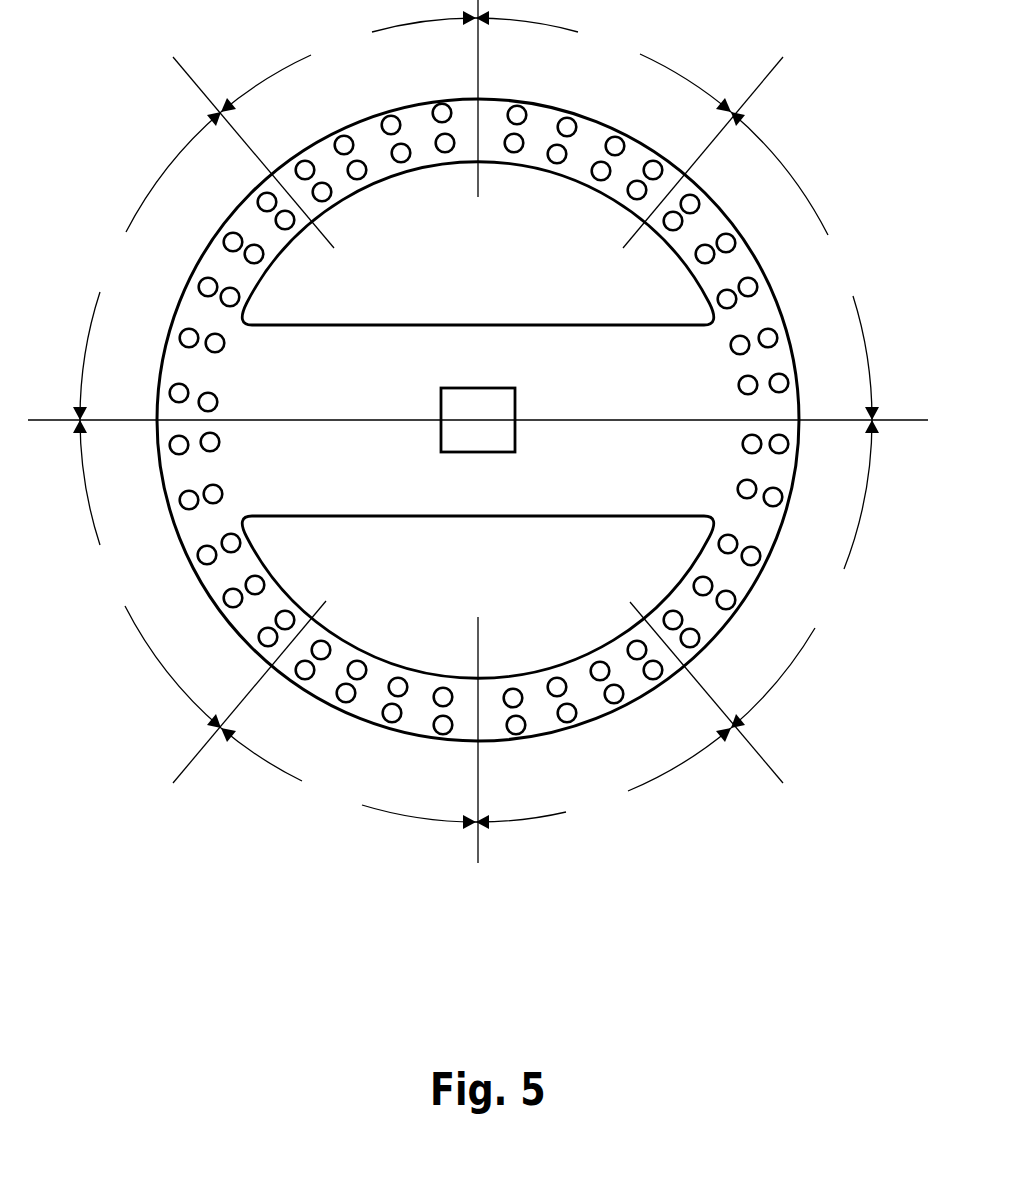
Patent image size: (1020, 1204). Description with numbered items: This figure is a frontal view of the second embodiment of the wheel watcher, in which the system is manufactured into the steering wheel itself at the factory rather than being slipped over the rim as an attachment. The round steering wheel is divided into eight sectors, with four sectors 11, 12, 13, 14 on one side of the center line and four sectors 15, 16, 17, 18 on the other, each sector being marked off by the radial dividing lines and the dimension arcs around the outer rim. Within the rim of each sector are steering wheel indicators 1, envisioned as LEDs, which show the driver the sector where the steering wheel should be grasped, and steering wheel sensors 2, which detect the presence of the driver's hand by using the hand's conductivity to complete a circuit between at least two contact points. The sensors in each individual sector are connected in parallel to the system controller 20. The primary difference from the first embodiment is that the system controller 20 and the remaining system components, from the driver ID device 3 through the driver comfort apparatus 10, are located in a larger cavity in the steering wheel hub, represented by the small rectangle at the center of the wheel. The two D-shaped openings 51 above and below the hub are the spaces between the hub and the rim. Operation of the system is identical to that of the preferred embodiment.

The steering wheel indicators 1 is at (262, 571).
The steering wheel sensors 2 is at (363, 591).
The slot opening 51 is at (332, 287).
The driver ID device 3 is at (487, 340).
The driver comfort apparatus 10 is at (487, 340).
The system controller 20 is at (487, 340).
The sector 11 is at (603, 64).
The sector 12 is at (801, 266).
The sector 13 is at (801, 574).
The sector 14 is at (603, 780).
The sector 15 is at (348, 775).
The sector 16 is at (150, 574).
The sector 17 is at (150, 266).
The sector 18 is at (348, 64).